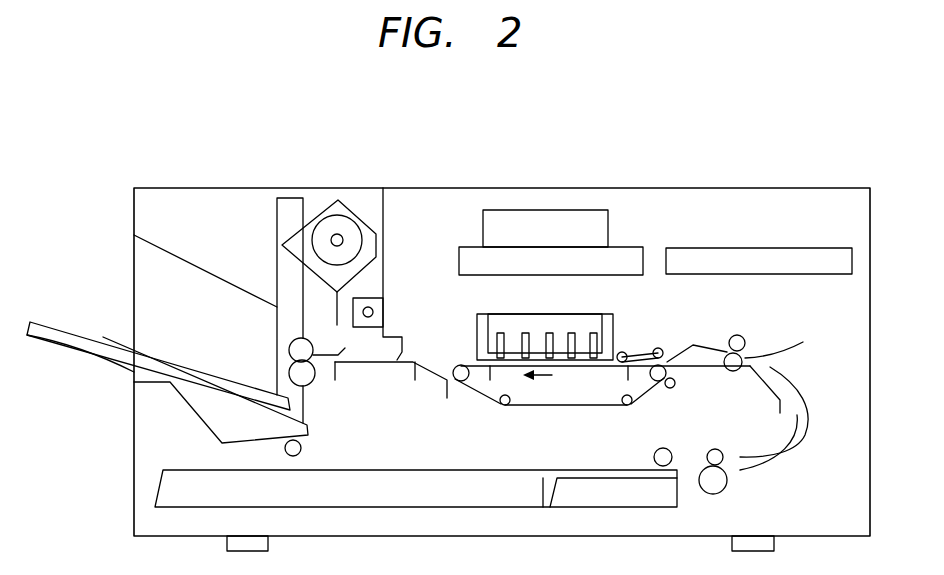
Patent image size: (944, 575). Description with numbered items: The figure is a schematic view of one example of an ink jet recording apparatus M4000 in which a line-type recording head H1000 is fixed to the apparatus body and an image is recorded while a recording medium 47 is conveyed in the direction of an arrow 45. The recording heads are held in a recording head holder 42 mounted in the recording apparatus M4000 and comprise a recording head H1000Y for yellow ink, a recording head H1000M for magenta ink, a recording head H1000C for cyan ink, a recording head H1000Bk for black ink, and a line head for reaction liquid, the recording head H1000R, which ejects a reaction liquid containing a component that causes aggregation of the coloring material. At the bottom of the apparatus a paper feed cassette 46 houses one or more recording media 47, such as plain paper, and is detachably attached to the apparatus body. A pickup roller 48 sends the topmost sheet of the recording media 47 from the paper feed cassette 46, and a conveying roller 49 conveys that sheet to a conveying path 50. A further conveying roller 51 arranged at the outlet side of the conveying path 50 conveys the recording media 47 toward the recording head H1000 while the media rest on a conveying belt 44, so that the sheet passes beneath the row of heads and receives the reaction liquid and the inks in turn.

The recording apparatus M4000 is at (797, 155).
The recording head H1000 is at (733, 126).
The recording head for yellow ink H1000Y is at (500, 333).
The recording head for magenta ink H1000M is at (525, 333).
The recording head for cyan ink H1000C is at (550, 333).
The recording head for black ink H1000Bk is at (571, 333).
The recording head for reaction liquid H1000R is at (596, 333).
The recording head holder 42 is at (613, 325).
The conveying belt 44 is at (647, 393).
The arrow 45 is at (553, 377).
The paper feed cassette 46 is at (428, 490).
The recording medium 47 is at (593, 490).
The pickup roller 48 is at (655, 450).
The conveying roller 49 is at (717, 484).
The conveying path 50 is at (788, 458).
The conveying roller 51 is at (742, 337).